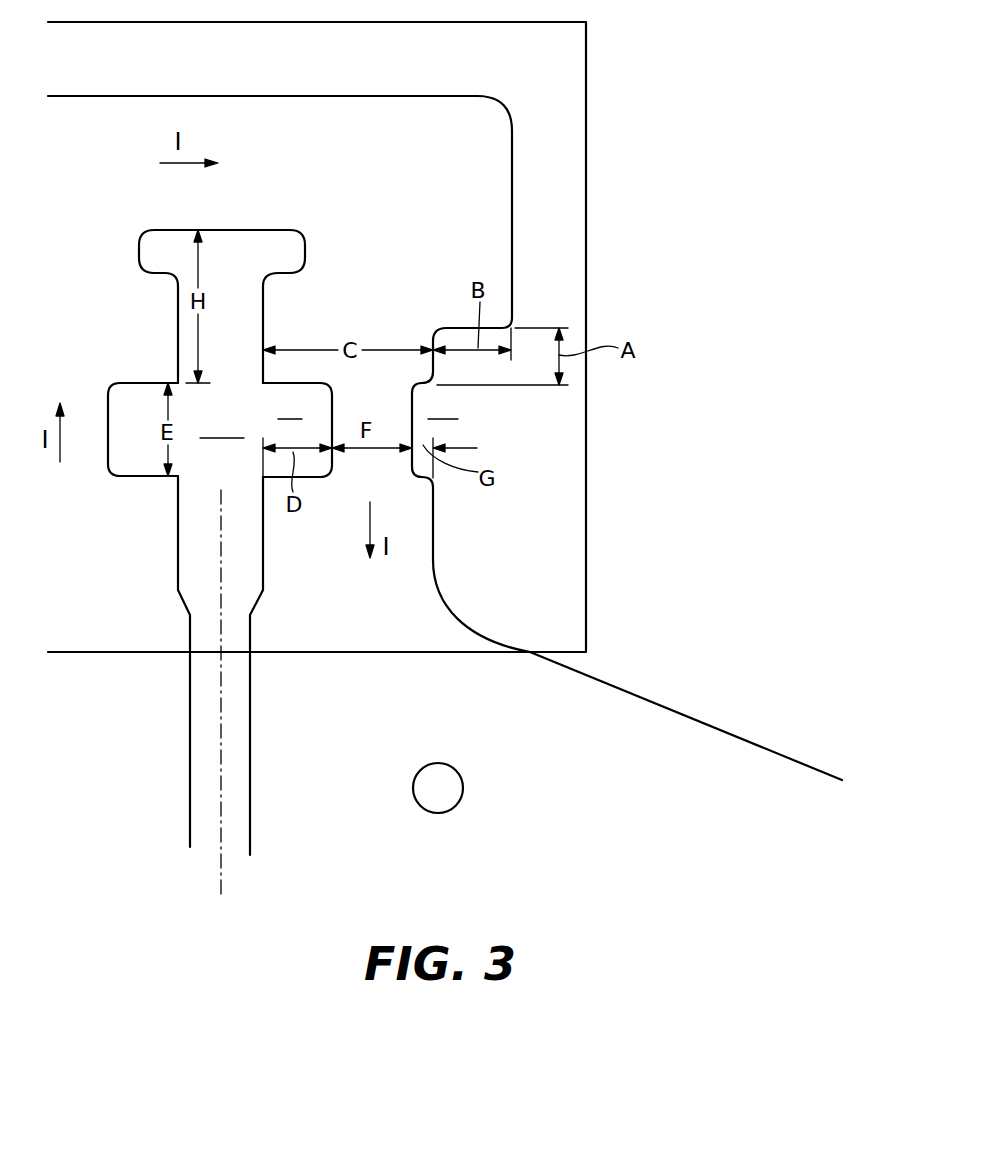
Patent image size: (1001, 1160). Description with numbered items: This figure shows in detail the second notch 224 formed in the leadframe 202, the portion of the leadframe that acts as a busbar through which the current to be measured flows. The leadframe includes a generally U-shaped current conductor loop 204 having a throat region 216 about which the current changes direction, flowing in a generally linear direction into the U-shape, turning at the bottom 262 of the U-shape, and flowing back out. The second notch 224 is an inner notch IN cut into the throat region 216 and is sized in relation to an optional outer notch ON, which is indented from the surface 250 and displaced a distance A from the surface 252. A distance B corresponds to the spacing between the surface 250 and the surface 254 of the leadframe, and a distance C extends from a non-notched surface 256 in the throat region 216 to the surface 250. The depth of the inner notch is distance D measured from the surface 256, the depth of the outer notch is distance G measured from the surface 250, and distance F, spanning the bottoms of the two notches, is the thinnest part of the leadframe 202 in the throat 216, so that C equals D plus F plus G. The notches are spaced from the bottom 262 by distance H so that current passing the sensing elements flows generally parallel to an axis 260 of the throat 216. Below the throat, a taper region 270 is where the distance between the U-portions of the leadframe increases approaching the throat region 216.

The leadframe 202 is at (329, 640).
The current conductor loop 204 is at (280, 159).
The throat region 216 is at (228, 542).
The second notch 224 is at (305, 479).
The surface 250 is at (433, 370).
The surface 252 is at (458, 328).
The surface 254 is at (589, 455).
The non-notched surface 256 is at (265, 305).
The axis 260 is at (221, 550).
The bottom 262 is at (252, 230).
The taper region 270 is at (176, 585).